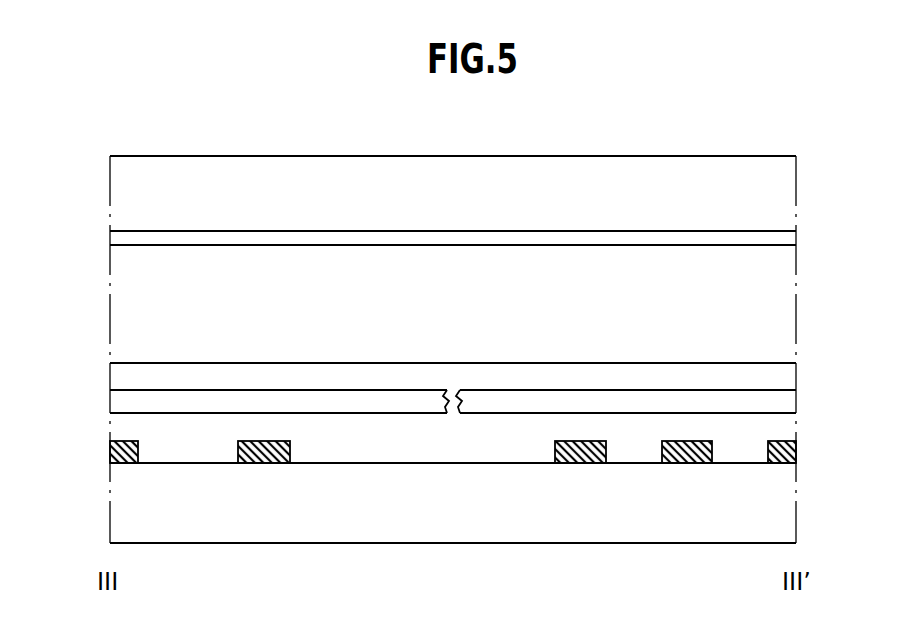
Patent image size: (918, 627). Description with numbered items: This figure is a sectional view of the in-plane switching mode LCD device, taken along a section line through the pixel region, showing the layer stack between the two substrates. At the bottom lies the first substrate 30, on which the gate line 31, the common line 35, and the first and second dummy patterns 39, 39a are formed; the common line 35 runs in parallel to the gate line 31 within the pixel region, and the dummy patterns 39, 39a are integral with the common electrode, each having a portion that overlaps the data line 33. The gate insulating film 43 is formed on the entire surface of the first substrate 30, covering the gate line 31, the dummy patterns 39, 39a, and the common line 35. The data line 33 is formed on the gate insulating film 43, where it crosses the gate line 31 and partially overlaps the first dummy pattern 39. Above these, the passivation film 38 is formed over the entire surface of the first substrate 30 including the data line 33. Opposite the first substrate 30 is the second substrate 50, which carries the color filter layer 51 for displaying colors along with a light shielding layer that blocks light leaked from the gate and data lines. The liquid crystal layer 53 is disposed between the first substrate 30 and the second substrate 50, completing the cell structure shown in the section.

The second substrate 50 is at (781, 194).
The color filter layer 51 is at (781, 239).
The liquid crystal layer 53 is at (781, 313).
The passivation film 38 is at (781, 377).
The data line 33 is at (781, 403).
The gate insulating film 43 is at (781, 428).
The gate line 31 is at (781, 453).
The first substrate 30 is at (781, 498).
The first dummy pattern 39 is at (264, 463).
The second dummy pattern 39a is at (578, 463).
The common line 35 is at (687, 463).